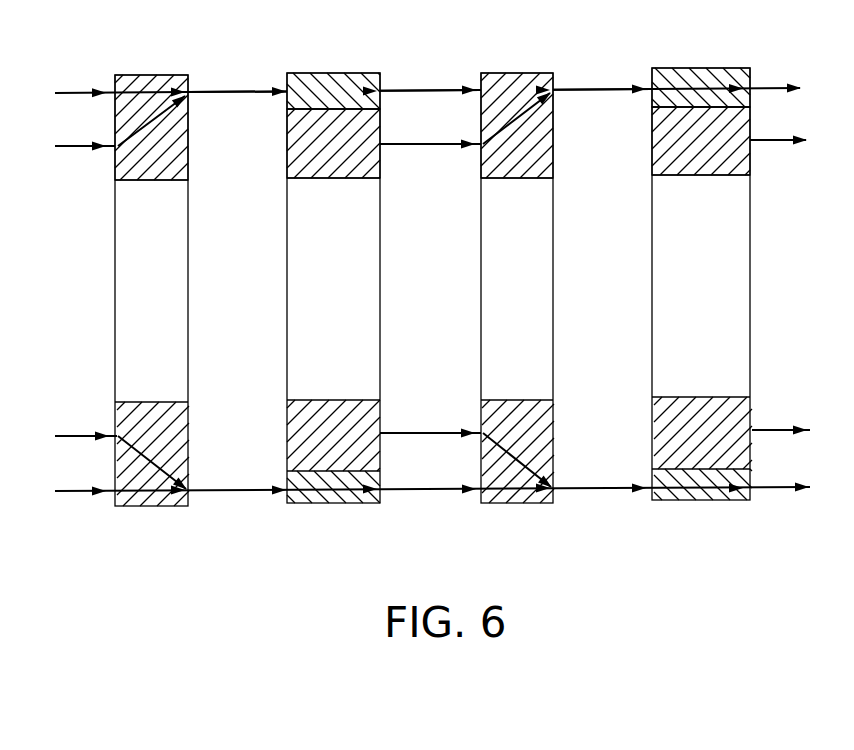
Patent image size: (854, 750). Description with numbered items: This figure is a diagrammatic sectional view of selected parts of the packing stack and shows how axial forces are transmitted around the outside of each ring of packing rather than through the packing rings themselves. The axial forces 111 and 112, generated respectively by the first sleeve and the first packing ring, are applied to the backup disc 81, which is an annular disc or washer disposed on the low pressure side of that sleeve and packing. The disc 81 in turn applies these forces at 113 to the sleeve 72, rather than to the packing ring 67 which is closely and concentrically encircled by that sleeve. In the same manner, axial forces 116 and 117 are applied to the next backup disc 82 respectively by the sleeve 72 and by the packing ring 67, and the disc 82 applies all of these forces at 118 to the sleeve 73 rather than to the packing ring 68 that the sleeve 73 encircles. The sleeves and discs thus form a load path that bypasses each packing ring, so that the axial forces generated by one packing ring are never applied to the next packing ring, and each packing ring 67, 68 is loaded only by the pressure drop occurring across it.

The axial force 111 is at (76, 92).
The axial force 112 is at (70, 150).
The backup disc 81 is at (145, 170).
The applied force 113 is at (232, 89).
The annular sleeve 72 is at (337, 80).
The packing ring 67 is at (300, 147).
The axial force 116 is at (427, 87).
The axial force 117 is at (424, 147).
The backup disc 82 is at (502, 170).
The applied force 118 is at (598, 87).
The annular sleeve 73 is at (693, 83).
The packing ring 68 is at (678, 163).